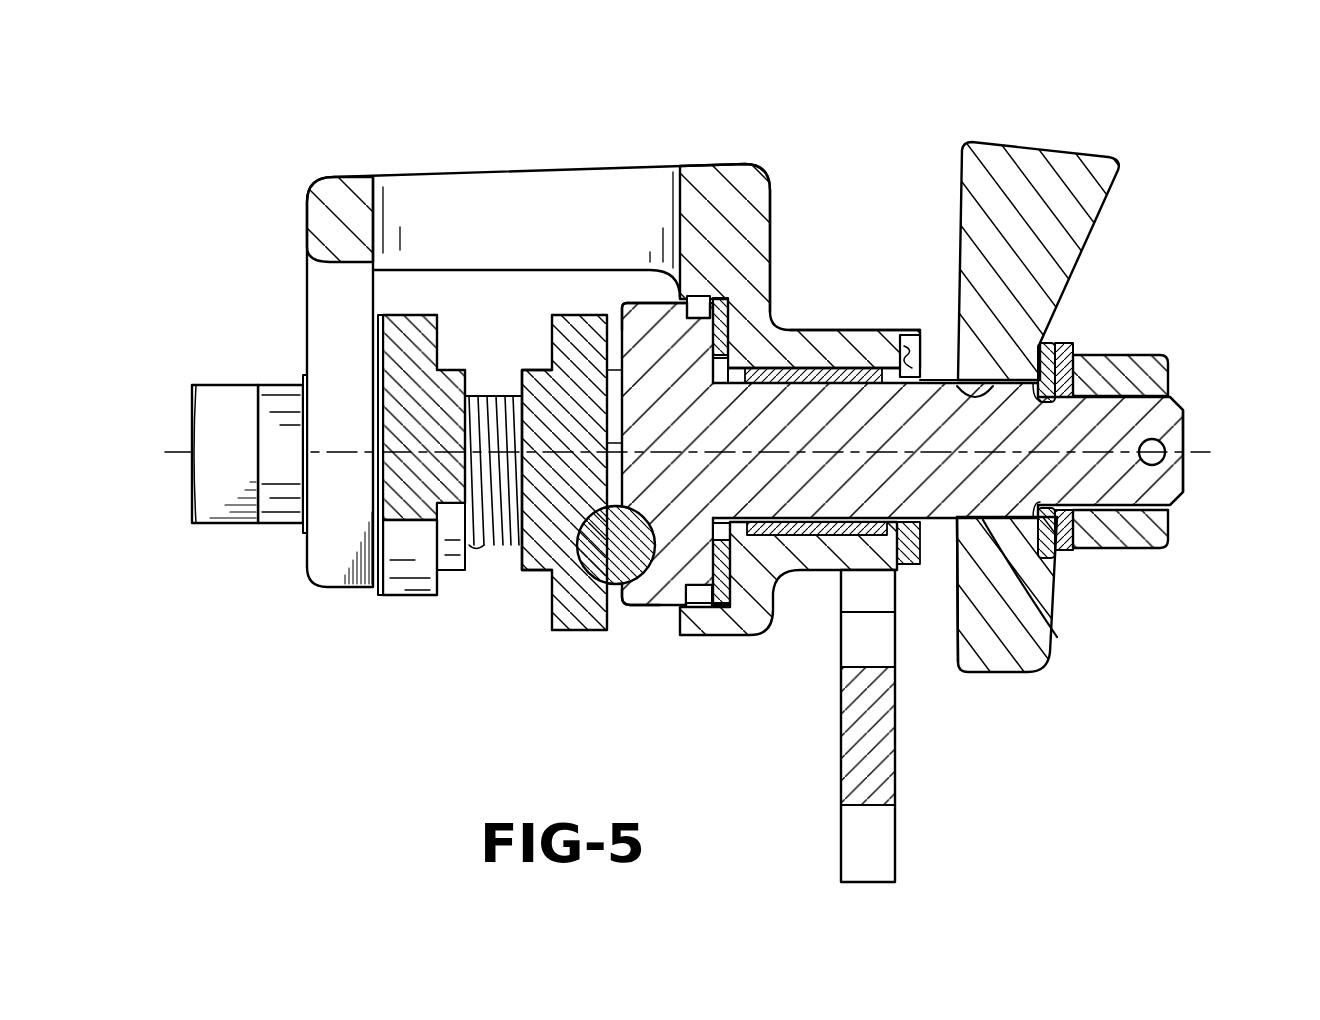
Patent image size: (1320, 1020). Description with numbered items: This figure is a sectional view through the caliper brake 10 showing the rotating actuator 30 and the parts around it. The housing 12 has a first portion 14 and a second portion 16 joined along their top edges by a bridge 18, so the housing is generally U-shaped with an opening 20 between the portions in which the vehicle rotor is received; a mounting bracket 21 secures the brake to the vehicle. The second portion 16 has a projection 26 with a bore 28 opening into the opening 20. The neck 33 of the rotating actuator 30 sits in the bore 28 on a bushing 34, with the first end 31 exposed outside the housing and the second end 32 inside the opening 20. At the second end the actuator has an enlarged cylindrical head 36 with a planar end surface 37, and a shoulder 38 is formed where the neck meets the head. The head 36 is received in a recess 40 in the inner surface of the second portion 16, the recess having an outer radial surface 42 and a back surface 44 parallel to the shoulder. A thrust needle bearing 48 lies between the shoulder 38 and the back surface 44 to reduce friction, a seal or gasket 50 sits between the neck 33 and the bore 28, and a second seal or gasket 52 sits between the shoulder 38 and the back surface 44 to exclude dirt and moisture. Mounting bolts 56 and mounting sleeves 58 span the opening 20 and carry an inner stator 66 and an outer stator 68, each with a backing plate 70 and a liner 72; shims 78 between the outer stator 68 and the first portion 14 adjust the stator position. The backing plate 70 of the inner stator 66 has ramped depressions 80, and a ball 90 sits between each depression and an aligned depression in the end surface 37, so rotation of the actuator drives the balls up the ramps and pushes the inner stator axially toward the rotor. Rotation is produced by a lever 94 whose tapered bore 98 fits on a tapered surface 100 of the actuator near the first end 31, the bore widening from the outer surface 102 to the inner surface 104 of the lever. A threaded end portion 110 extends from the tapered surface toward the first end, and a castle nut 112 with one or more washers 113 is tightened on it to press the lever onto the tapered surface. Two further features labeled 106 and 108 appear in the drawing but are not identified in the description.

The caliper brake 10 is at (338, 118).
The housing 12 is at (774, 164).
The first portion 14 is at (318, 218).
The second portion 16 is at (750, 220).
The bridge 18 is at (490, 190).
The opening 20 is at (466, 652).
The mounting bracket 21 is at (873, 777).
The projection 26 is at (823, 347).
The bore 28 is at (866, 368).
The rotating actuator 30 is at (1195, 418).
The first end 31 is at (1185, 478).
The second end 32 is at (638, 600).
The neck 33 is at (926, 425).
The bushing 34 is at (817, 530).
The head 36 is at (663, 333).
The end surface 37 is at (625, 323).
The shoulder 38 is at (656, 606).
The recess 40 is at (730, 620).
The outer radial surface 42 is at (721, 318).
The back surface 44 is at (723, 365).
The thrust needle bearing 48 is at (721, 552).
The seal or gasket 50 is at (912, 538).
The second seal or gasket 52 is at (700, 305).
The mounting bolt 56 is at (225, 487).
The mounting sleeve 58 is at (288, 398).
The inner stator 66 is at (582, 638).
The outer stator 68 is at (405, 592).
The backing plate 70 is at (395, 318).
The liner 72 is at (456, 383).
The shim 78 is at (383, 330).
The ramped depression 80 is at (597, 548).
The ball 90 is at (556, 576).
The lever 94 is at (1048, 235).
The tapered bore 98 is at (958, 378).
The tapered surface 100 is at (1047, 580).
The outer surface 102 is at (1042, 360).
The inner surface 104 is at (1055, 632).
The wedge face 106 is at (953, 525).
The lower seal 108 is at (1050, 550).
The threaded end portion 110 is at (1130, 512).
The castle nut 112 is at (1130, 372).
The washer 113 is at (1063, 370).